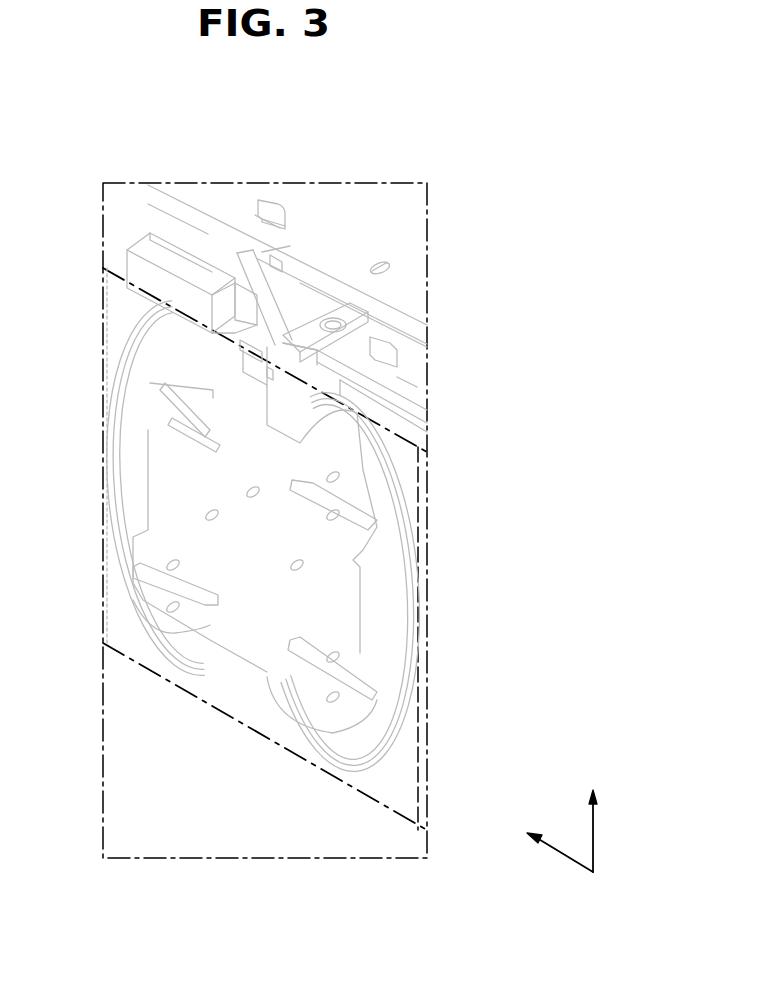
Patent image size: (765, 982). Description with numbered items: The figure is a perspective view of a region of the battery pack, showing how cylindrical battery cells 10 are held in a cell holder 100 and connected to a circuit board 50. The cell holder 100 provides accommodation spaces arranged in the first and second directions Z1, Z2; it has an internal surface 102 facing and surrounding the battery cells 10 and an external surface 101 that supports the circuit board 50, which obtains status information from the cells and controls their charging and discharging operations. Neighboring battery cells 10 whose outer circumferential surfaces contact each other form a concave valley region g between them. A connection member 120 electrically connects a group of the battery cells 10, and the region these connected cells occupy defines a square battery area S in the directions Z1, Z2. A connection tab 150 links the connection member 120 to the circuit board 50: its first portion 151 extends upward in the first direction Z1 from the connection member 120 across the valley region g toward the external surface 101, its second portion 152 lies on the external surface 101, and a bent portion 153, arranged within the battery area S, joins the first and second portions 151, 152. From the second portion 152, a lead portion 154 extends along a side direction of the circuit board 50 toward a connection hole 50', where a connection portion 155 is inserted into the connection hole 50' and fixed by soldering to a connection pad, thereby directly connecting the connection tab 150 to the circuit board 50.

The battery cell 10 is at (358, 752).
The circuit board 50 is at (329, 307).
The connection hole 50' is at (253, 170).
The cell holder 100 is at (523, 372).
The external surface 101 is at (397, 393).
The internal surface 102 is at (350, 412).
The connection member 120 is at (254, 623).
The connection tab 150 is at (208, 235).
The first portion 151 is at (253, 390).
The second portion 152 is at (317, 337).
The bent portion 153 is at (255, 370).
The lead portion 154 is at (280, 300).
The connection portion 155 is at (273, 207).
The valley region g is at (273, 395).
The battery area S is at (418, 618).
The first direction Z1 is at (591, 819).
The second direction Z2 is at (545, 842).